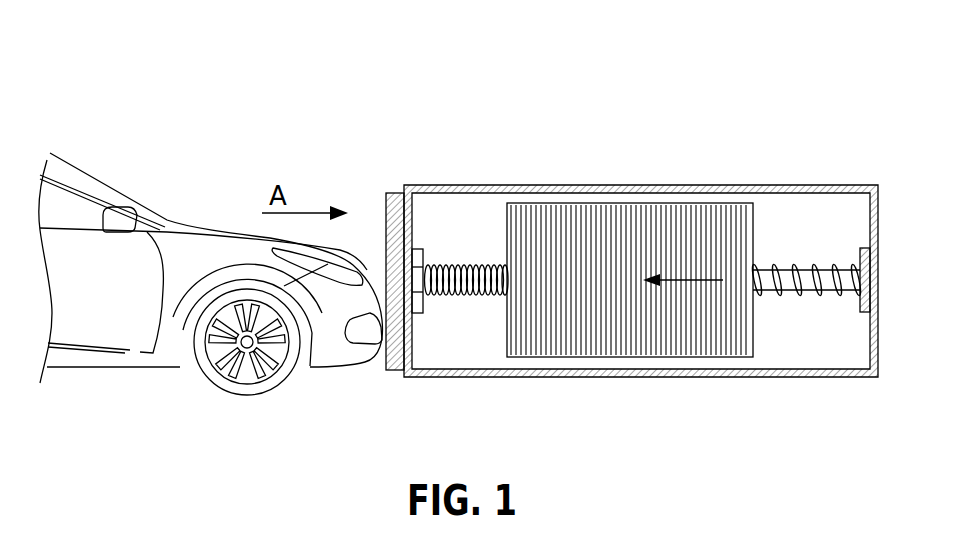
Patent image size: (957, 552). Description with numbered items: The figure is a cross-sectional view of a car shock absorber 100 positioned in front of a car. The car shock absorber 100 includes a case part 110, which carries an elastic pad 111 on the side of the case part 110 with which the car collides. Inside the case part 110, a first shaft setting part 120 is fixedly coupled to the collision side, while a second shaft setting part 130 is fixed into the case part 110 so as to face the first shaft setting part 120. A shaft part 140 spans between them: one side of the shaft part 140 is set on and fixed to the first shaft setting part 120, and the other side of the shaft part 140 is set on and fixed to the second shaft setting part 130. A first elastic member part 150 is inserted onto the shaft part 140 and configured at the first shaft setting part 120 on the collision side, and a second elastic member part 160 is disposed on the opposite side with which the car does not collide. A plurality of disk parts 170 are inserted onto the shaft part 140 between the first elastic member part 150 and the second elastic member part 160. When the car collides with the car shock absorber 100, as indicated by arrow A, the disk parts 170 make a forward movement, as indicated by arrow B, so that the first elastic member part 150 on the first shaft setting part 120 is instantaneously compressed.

The car shock absorber 100 is at (503, 124).
The case part 110 is at (680, 188).
The elastic pad 111 is at (383, 367).
The first shaft setting part 120 is at (415, 300).
The second shaft setting part 130 is at (860, 315).
The shaft part 140 is at (847, 283).
The first elastic member part 150 is at (443, 277).
The second elastic member part 160 is at (815, 270).
The disk parts 170 is at (607, 227).